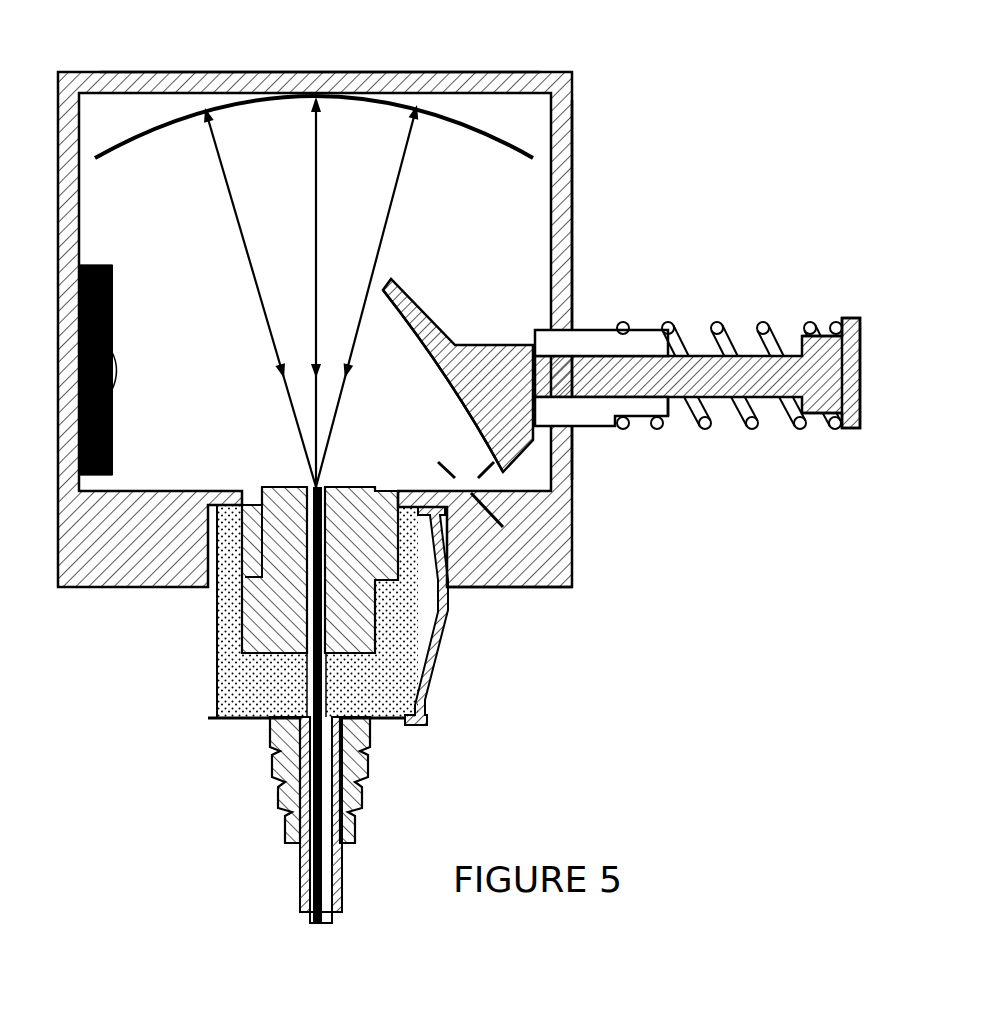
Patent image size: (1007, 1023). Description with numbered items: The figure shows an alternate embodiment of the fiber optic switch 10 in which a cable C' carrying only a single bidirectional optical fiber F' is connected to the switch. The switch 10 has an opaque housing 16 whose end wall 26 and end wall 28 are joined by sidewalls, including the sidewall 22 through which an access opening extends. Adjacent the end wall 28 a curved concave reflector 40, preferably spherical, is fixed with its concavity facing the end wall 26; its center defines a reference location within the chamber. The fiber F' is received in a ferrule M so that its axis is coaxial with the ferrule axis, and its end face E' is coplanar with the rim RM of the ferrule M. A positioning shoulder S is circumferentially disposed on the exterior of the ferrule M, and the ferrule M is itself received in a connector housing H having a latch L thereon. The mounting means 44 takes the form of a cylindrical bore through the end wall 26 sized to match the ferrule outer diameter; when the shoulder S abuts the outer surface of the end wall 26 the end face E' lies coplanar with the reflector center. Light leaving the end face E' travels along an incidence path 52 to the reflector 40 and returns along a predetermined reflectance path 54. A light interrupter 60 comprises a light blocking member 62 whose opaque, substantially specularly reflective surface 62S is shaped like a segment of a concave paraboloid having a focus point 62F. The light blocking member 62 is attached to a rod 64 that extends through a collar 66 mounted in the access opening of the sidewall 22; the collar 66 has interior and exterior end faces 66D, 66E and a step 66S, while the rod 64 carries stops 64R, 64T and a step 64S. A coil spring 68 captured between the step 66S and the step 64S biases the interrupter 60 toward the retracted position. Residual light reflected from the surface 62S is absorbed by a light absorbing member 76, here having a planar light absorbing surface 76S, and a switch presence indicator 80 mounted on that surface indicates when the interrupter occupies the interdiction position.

The switch 10 is at (413, 321).
The housing 16 is at (573, 77).
The sidewall 22 is at (575, 217).
The end wall 26 is at (498, 587).
The end wall 28 is at (502, 72).
The curved concave reflector 40 is at (315, 292).
The mounting means 44 is at (285, 692).
The incidence path 52 is at (313, 118).
The reflectance path 54 is at (313, 350).
The light interrupter 60 is at (611, 358).
The light blocking member 62 is at (418, 306).
The light blocking surface 62S is at (428, 366).
The focus point 62F is at (466, 478).
The rod 64 is at (722, 402).
The stop 64R is at (542, 403).
The step 64S is at (842, 318).
The stop 64T is at (805, 343).
The collar 66 is at (570, 359).
The interior end face 66D is at (533, 332).
The step 66S is at (630, 326).
The exterior end face 66E is at (672, 403).
The coil spring 68 is at (800, 428).
The light absorbing member 76 is at (97, 265).
The light absorbing surface 76S is at (112, 320).
The switch presence indicator 80 is at (118, 373).
The rim RM is at (290, 487).
The end face E' is at (289, 679).
The positioning shoulder S is at (247, 575).
The ferrule M is at (230, 630).
The latch L is at (443, 622).
The connector housing H is at (238, 719).
The cable C' is at (296, 814).
The optical fiber F' is at (293, 934).